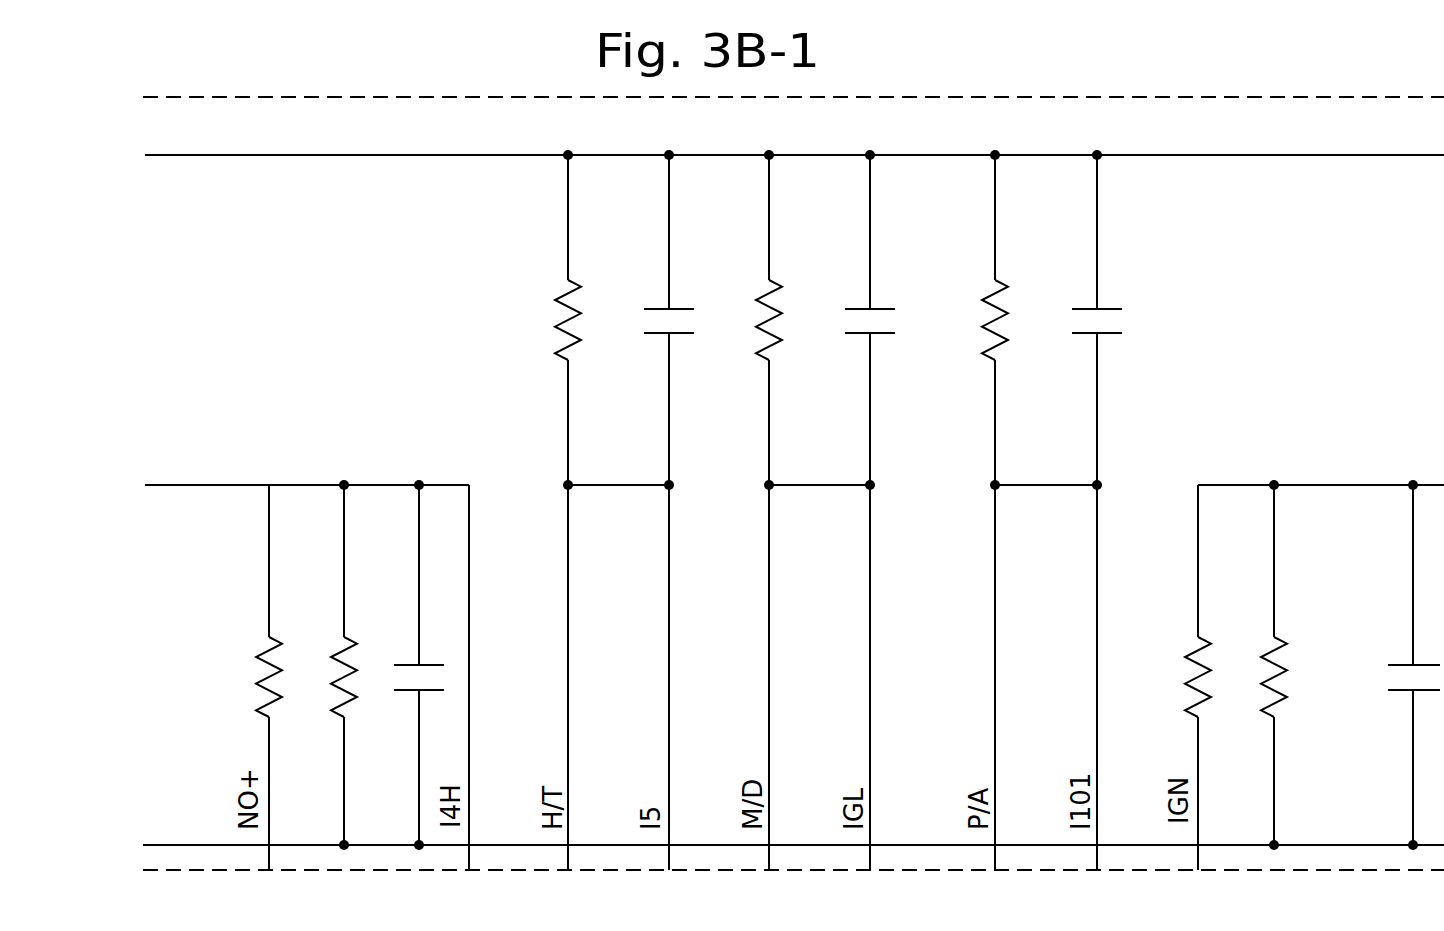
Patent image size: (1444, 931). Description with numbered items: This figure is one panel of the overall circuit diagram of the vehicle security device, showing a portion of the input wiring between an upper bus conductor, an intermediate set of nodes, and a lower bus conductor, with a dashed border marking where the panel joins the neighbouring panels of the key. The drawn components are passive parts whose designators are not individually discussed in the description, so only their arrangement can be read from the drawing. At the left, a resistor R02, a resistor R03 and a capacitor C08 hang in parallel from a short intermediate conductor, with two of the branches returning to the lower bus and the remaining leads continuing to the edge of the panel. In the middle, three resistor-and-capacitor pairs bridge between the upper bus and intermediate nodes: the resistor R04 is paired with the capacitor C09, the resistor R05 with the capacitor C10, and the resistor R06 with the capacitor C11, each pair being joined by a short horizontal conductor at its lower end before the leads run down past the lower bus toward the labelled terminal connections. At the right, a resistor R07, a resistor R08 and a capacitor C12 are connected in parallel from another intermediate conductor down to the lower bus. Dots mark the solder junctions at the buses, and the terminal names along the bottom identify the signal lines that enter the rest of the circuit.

The resistor R02 is at (252, 677).
The resistor R03 is at (327, 665).
The capacitor C08 is at (407, 665).
The resistor R04 is at (550, 512).
The capacitor C09 is at (651, 512).
The resistor R05 is at (751, 512).
The capacitor C10 is at (852, 512).
The resistor R06 is at (977, 512).
The capacitor C11 is at (1079, 512).
The resistor R07 is at (1179, 677).
The resistor R08 is at (1256, 665).
The capacitor C12 is at (1399, 665).